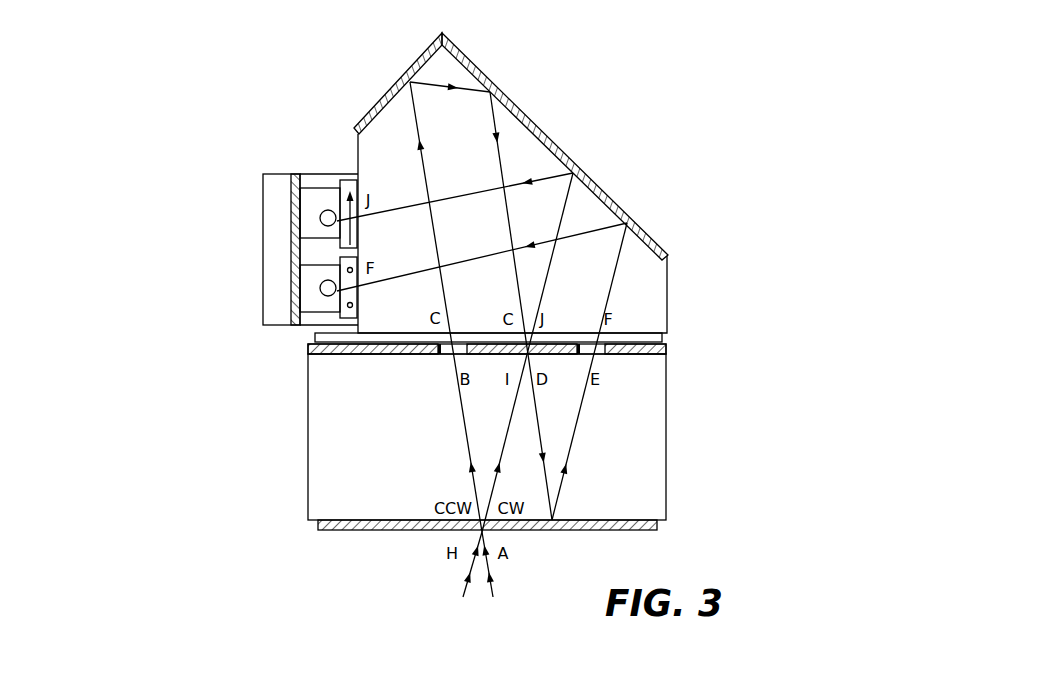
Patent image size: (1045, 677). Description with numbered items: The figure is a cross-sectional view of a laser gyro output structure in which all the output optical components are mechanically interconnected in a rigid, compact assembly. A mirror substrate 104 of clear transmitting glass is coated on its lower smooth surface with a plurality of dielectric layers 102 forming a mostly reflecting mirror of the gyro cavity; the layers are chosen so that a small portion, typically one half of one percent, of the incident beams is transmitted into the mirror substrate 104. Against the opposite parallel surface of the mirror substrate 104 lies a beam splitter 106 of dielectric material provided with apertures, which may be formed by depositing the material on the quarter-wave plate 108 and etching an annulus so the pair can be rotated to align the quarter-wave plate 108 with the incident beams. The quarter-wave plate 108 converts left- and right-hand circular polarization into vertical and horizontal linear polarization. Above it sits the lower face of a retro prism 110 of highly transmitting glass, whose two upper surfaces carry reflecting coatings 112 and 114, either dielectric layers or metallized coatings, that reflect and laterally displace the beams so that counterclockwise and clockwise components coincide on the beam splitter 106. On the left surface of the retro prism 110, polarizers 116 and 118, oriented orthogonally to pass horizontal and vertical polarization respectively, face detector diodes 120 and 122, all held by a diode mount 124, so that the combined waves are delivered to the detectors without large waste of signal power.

The dielectric layers 102 is at (657, 529).
The mirror substrate 104 is at (667, 437).
The beam splitter 106 is at (666, 350).
The quarter-wave plate 108 is at (663, 339).
The retro prism 110 is at (657, 287).
The reflecting coating 112 is at (585, 176).
The reflecting coating 114 is at (427, 42).
The polarizer 116 is at (348, 186).
The polarizer 118 is at (341, 311).
The detector diode 120 is at (307, 200).
The detector diode 122 is at (308, 296).
The diode mount 124 is at (270, 223).